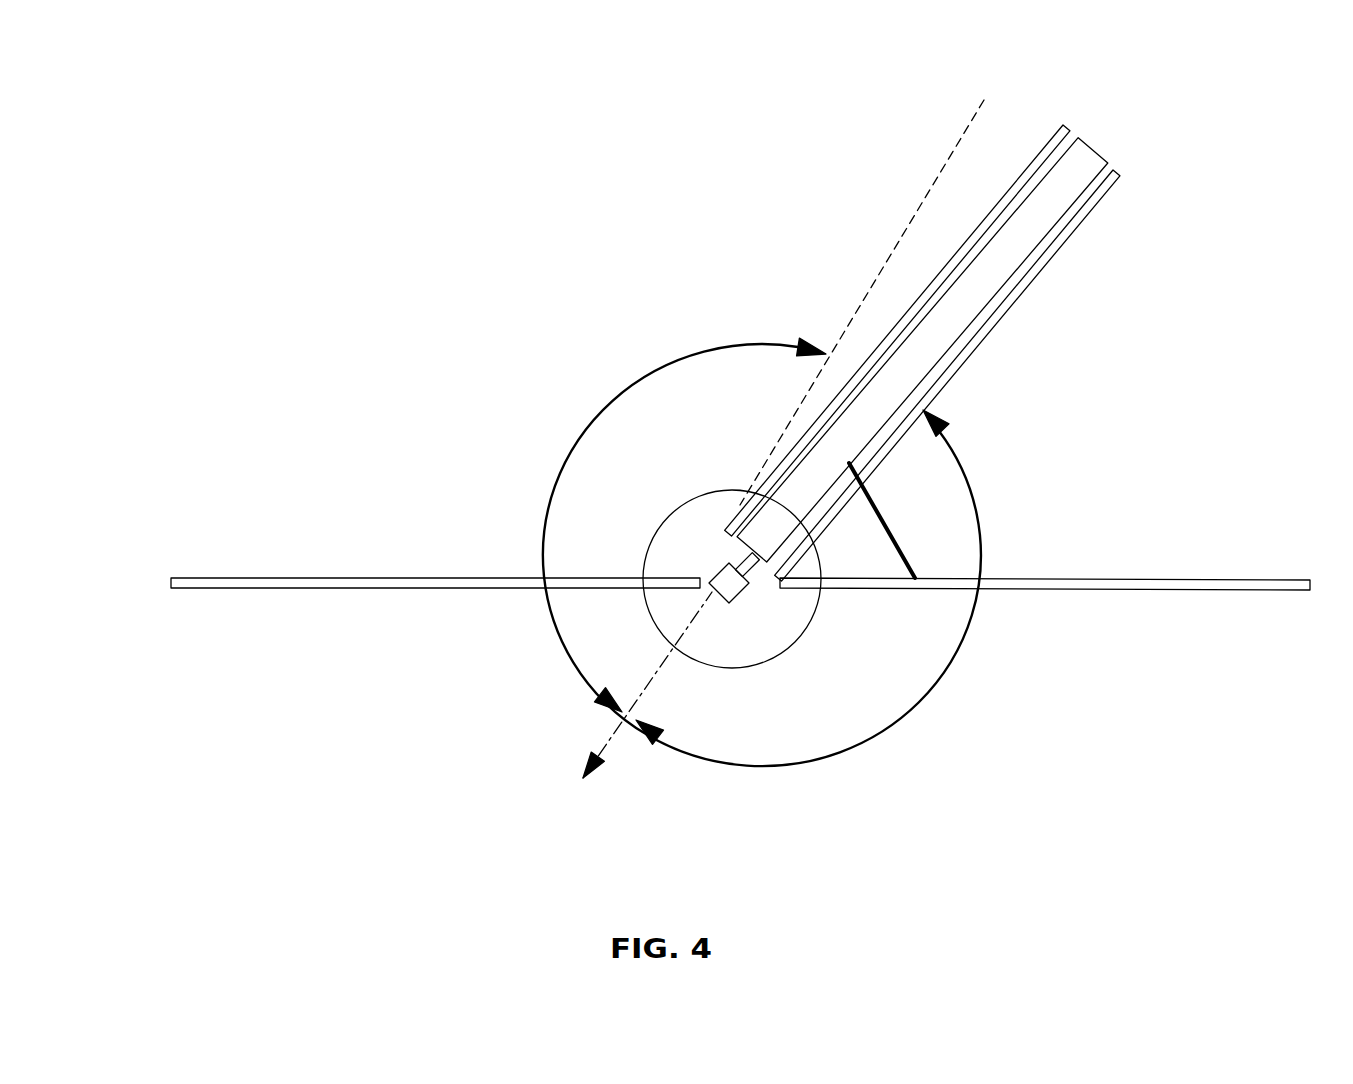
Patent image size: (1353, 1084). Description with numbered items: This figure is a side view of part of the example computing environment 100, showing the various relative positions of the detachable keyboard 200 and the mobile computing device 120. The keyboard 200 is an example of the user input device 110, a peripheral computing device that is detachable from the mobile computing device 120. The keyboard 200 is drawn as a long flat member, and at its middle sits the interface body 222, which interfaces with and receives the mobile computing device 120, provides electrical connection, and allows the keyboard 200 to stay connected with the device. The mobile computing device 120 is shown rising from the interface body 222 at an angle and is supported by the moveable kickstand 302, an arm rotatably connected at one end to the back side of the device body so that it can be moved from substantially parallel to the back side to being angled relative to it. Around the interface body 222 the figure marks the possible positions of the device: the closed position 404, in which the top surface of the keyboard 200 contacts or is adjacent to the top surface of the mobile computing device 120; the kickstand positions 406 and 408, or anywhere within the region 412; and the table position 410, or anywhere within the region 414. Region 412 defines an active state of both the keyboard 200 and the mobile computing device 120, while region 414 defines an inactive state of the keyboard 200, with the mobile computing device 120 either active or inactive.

The computing environment 100 is at (226, 90).
The user input device 110 is at (224, 644).
The mobile computing device 120 is at (1097, 148).
The detachable keyboard 200 is at (740, 549).
The interface body 222 is at (758, 606).
The kickstand 302 is at (890, 528).
The closed position 404 is at (1034, 160).
The kickstand position 406 is at (430, 578).
The kickstand position 408 is at (612, 742).
The table position 410 is at (1108, 196).
The region 412 is at (761, 552).
The region 414 is at (977, 542).